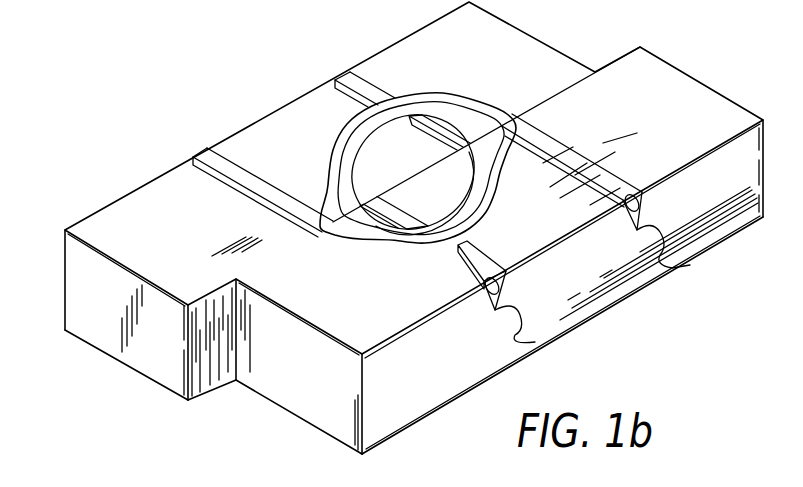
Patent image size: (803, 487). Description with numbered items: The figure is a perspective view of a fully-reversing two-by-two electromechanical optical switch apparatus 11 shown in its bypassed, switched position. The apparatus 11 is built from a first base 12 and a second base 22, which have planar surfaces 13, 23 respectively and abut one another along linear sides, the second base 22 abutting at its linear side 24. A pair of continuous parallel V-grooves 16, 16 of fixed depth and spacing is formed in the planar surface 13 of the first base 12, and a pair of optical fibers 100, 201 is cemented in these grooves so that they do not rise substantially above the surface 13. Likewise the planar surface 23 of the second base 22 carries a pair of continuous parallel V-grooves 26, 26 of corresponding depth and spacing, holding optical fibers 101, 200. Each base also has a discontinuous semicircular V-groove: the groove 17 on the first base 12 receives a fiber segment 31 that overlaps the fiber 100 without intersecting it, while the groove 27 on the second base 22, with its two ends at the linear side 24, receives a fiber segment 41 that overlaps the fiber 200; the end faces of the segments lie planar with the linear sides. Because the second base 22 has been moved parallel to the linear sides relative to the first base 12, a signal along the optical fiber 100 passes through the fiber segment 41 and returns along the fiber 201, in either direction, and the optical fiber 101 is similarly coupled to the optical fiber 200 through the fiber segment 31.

The optical switch apparatus 11 is at (213, 42).
The first base 12 is at (102, 332).
The planar surface 13 is at (122, 218).
The V-grooves 16 is at (205, 150).
The discontinuous semicircular V-groove 17 is at (490, 107).
The second base 22 is at (285, 382).
The planar surface 23 is at (373, 327).
The linear side 24 is at (615, 57).
The V-grooves 26 is at (535, 342).
The discontinuous semicircular V-groove 27 is at (497, 160).
The fiber segment 31 is at (440, 110).
The fiber segment 41 is at (395, 253).
The optical fiber 100 is at (340, 78).
The optical fiber 101 is at (623, 195).
The optical fiber 200 is at (480, 272).
The optical fiber 201 is at (197, 157).